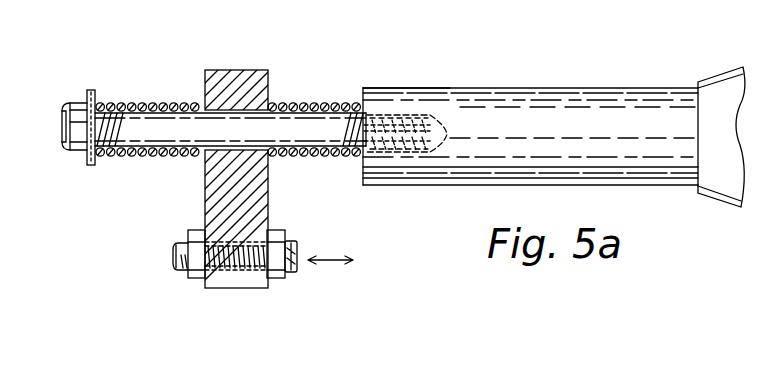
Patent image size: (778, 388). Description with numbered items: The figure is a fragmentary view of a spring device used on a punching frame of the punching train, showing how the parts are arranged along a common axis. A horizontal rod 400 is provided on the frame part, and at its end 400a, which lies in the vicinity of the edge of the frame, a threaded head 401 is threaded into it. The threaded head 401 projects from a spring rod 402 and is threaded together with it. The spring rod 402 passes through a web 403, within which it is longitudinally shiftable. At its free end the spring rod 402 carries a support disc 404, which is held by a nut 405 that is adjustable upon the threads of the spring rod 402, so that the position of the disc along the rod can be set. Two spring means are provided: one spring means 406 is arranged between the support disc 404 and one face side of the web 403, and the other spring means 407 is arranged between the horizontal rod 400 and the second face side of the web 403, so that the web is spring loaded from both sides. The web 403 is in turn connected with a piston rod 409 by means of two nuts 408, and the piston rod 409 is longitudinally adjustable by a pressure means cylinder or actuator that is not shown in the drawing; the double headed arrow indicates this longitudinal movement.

The horizontal rod 400 is at (538, 100).
The end 400a is at (412, 100).
The threaded head 401 is at (405, 153).
The spring rod 402 is at (163, 120).
The web 403 is at (255, 78).
The support disc 404 is at (92, 100).
The nut 405 is at (85, 108).
The spring means 406 is at (110, 103).
The spring means 407 is at (335, 104).
The nuts 408 is at (275, 238).
The piston rod 409 is at (289, 273).